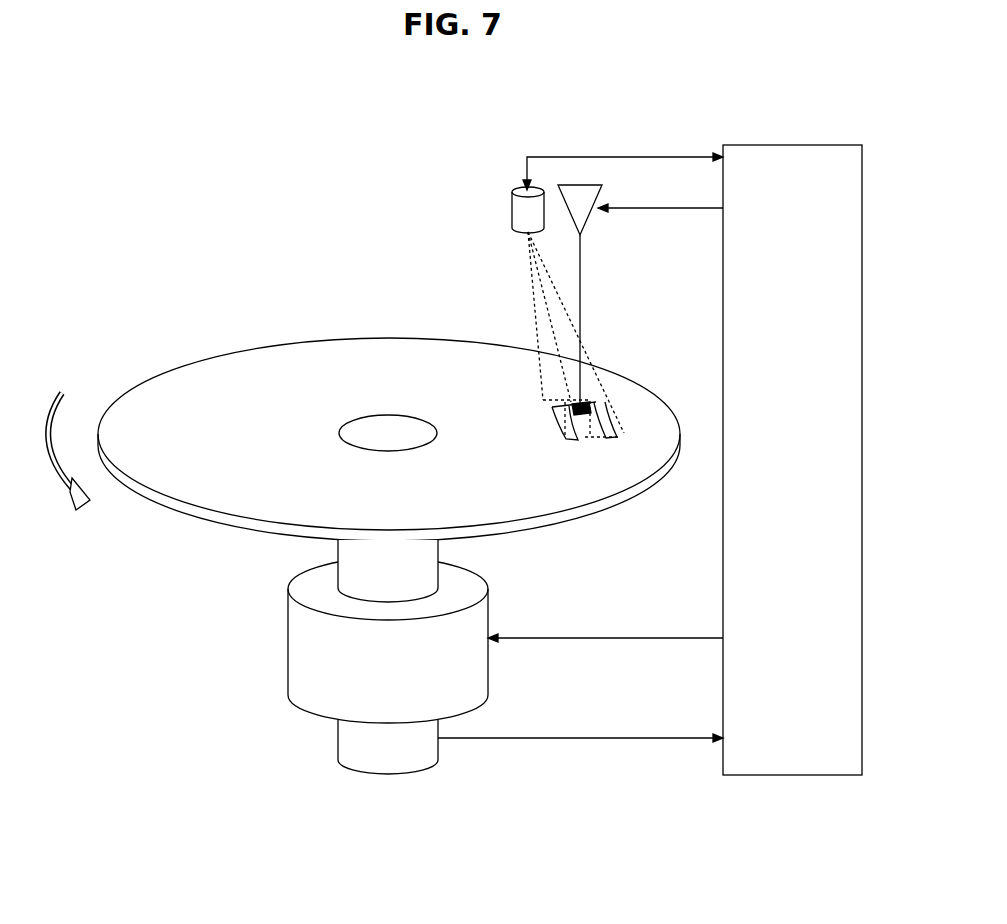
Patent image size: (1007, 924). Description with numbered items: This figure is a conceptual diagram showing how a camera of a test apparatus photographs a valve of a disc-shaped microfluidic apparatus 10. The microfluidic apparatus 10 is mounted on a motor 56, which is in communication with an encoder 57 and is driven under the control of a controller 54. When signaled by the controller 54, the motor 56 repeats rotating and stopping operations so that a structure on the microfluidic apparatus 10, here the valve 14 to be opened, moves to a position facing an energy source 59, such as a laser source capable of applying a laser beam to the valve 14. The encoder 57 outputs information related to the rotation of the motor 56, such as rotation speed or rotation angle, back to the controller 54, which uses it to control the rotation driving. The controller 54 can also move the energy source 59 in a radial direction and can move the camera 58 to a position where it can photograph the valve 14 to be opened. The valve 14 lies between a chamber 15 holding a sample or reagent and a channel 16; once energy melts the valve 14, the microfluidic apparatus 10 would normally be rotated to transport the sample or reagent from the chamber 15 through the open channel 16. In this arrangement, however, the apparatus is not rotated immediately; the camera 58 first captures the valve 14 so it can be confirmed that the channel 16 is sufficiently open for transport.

The microfluidic apparatus 10 is at (142, 397).
The valve 14 is at (583, 403).
The chamber 15 is at (563, 430).
The channel 16 is at (598, 407).
The controller 54 is at (792, 145).
The motor 56 is at (300, 638).
The encoder 57 is at (343, 745).
The camera 58 is at (518, 212).
The energy source 59 is at (585, 218).